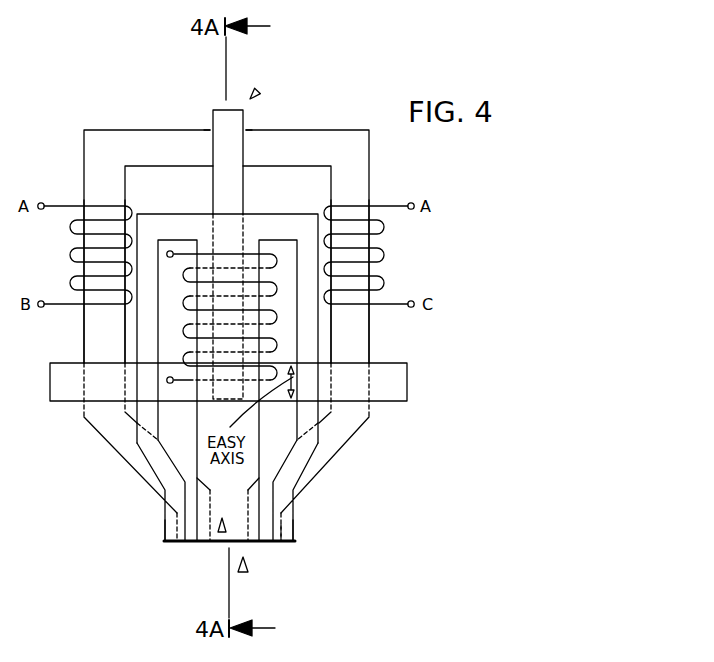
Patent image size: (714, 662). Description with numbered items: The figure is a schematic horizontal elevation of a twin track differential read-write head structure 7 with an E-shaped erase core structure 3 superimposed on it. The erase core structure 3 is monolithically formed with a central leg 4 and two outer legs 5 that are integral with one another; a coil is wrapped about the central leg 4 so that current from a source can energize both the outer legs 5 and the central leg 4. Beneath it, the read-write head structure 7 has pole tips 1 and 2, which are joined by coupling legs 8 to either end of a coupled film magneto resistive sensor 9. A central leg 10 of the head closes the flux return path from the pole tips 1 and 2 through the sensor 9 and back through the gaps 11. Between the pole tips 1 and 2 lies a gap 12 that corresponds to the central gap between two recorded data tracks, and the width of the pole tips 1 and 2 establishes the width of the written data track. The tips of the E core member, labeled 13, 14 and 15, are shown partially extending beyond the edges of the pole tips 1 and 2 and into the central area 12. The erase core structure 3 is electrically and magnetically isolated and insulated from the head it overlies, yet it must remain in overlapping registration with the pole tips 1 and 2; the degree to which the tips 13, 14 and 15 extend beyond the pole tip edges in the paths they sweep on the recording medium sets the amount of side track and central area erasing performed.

The pole tip 1 is at (188, 543).
The pole tip 2 is at (268, 544).
The erase core structure 3 is at (272, 214).
The central leg 4 is at (258, 249).
The outer legs 5 is at (142, 320).
The twin track read-write head structure 7 is at (258, 91).
The coupling legs 8 is at (172, 257).
The coupled film magneto resistive sensor 9 is at (286, 396).
The central leg 10 is at (228, 122).
The gaps 11 is at (211, 126).
The gap 12 is at (244, 573).
The tip of E core member 13 is at (170, 545).
The tip of E core member 14 is at (221, 534).
The tip of E core member 15 is at (293, 542).